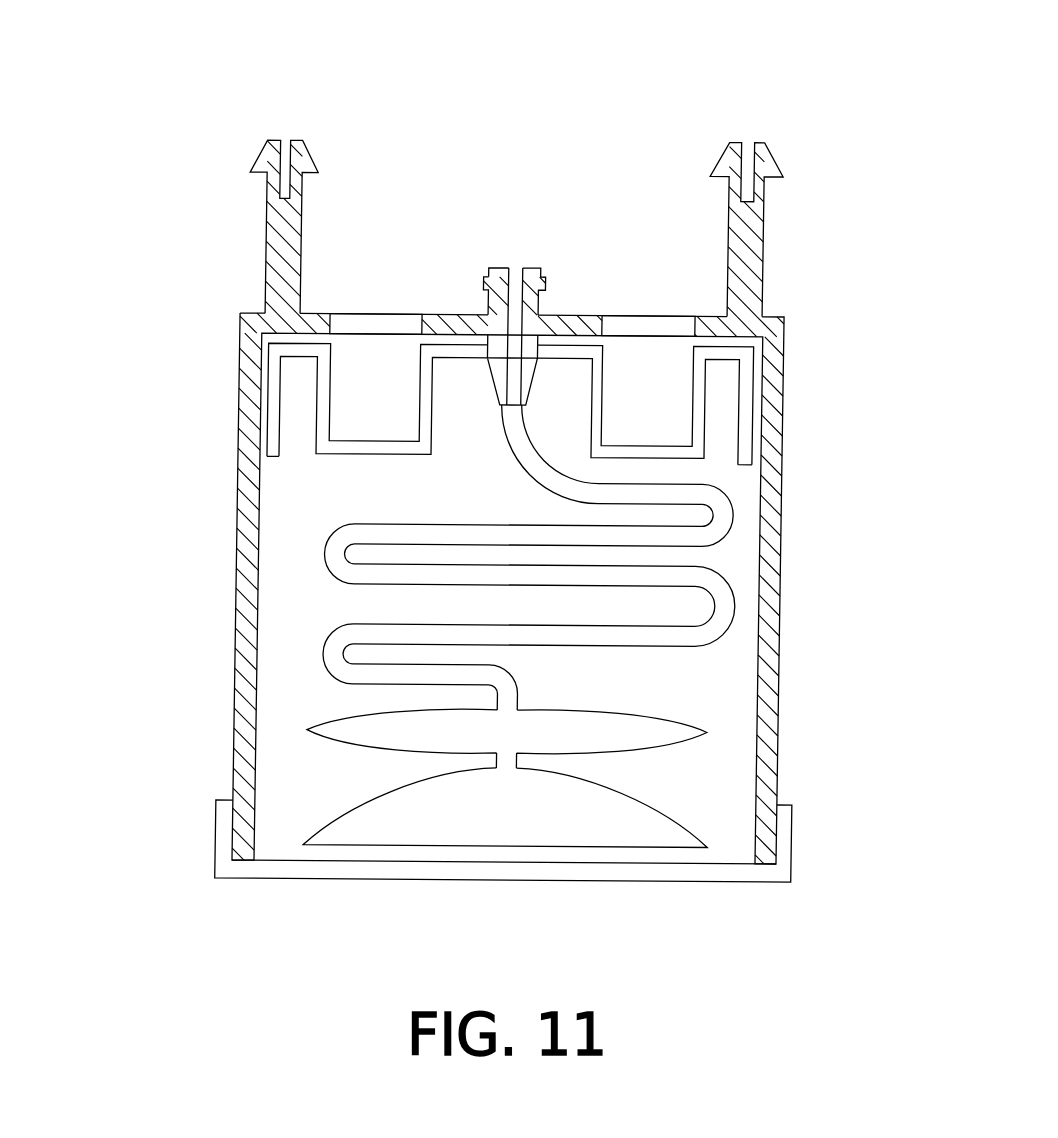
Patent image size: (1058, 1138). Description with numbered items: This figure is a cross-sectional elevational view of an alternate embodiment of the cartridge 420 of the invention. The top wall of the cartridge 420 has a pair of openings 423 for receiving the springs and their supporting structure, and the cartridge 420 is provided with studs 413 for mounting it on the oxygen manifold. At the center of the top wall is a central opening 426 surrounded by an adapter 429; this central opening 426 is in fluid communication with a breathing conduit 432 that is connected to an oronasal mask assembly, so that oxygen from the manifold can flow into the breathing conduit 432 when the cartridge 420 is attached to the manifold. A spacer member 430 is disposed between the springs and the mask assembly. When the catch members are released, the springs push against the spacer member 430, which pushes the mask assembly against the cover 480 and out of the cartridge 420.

The studs 413 is at (276, 143).
The cartridge 420 is at (216, 628).
The openings 423 is at (349, 285).
The central opening 426 is at (508, 230).
The adapter 429 is at (539, 270).
The spacer member 430 is at (275, 430).
The breathing conduit 432 is at (723, 511).
The cover 480 is at (783, 835).